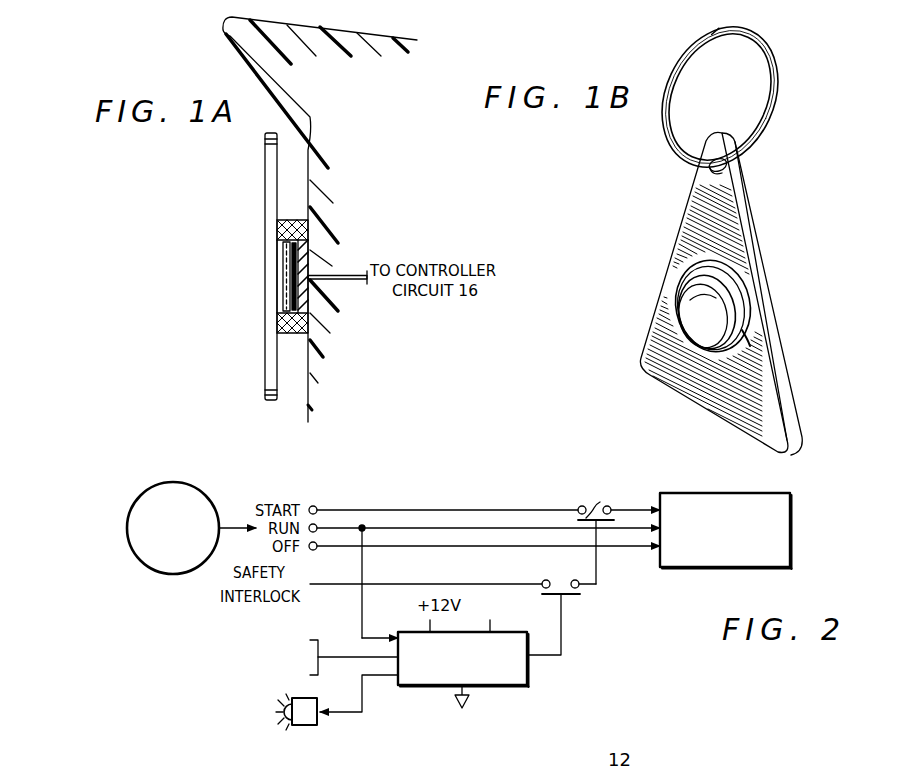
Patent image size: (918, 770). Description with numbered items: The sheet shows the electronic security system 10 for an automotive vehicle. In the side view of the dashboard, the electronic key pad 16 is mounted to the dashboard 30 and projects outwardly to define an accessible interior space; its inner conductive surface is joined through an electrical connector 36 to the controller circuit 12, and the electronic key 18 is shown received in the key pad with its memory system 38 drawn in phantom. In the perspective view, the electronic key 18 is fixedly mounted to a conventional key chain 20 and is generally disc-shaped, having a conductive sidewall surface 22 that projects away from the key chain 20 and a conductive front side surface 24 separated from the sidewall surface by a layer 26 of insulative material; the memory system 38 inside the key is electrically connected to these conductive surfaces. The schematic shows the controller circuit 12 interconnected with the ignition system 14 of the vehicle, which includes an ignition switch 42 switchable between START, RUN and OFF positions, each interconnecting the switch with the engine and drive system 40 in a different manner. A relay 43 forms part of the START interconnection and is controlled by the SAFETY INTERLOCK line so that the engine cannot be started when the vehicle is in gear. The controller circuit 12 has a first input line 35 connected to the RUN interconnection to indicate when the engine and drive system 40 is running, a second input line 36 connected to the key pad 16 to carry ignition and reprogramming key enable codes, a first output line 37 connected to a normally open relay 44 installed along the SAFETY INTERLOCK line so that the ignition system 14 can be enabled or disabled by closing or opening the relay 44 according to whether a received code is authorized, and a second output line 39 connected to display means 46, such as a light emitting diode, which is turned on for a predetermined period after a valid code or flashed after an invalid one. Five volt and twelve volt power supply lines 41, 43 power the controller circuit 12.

In FIG. 2, the electronic security system 10 is at (584, 678).
In FIG. 2, the controller circuit 12 is at (505, 688).
In FIG. 2, the ignition system 14 is at (566, 490).
In FIG. 1A, the electronic key pad 16 is at (299, 221).
In FIG. 2, the electronic key pad 16 is at (313, 640).
In FIG. 1A, the electronic key 18 is at (283, 295).
In FIG. 1B, the electronic key 18 is at (742, 280).
In FIG. 1A, the key chain 20 is at (265, 200).
In FIG. 1B, the key chain 20 is at (757, 203).
In FIG. 1B, the conductive sidewall surface 22 is at (748, 334).
In FIG. 1B, the conductive front side surface 24 is at (683, 278).
In FIG. 1B, the layer of insulative material 26 is at (735, 306).
In FIG. 1A, the dashboard 30 is at (226, 33).
In FIG. 2, the first input line 35 is at (364, 578).
In FIG. 1A, the second input line / electrical connector 36 is at (359, 284).
In FIG. 2, the second input line / electrical connector 36 is at (348, 660).
In FIG. 2, the first output line 37 is at (546, 658).
In FIG. 1A, the memory system 38 is at (283, 262).
In FIG. 2, the second output line 39 is at (362, 700).
In FIG. 2, the engine and drive system 40 is at (790, 532).
In FIG. 2, the +5 volt power supply line 41 is at (490, 627).
In FIG. 2, the ignition switch 42 is at (127, 530).
In FIG. 2, the relay 43 is at (410, 622).
In FIG. 2, the normally open relay 44 is at (571, 596).
In FIG. 2, the display means 46 is at (303, 727).